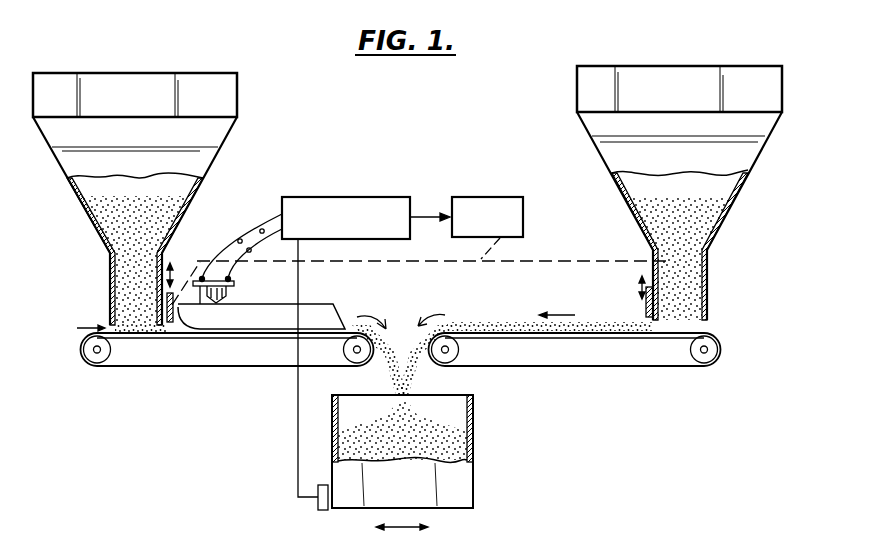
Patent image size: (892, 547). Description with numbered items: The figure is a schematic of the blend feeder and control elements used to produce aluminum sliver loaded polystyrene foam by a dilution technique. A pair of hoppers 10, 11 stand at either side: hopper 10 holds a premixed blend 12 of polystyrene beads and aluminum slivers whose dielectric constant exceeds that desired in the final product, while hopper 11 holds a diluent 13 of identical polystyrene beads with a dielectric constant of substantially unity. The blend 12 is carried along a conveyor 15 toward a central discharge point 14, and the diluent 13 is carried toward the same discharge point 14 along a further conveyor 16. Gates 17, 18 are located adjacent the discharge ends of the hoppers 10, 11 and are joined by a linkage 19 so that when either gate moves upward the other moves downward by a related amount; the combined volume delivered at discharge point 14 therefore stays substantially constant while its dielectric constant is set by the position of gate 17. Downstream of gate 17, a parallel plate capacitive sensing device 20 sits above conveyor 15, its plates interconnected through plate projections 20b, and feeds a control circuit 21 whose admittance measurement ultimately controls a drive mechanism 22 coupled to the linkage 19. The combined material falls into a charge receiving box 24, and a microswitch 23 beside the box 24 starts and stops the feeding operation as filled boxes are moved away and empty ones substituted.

The hopper 10 is at (205, 150).
The hopper 11 is at (620, 152).
The premixed blend 12 is at (153, 216).
The diluent 13 is at (683, 224).
The central discharge point 14 is at (441, 391).
The conveyor 15 is at (140, 367).
The further conveyor 16 is at (600, 367).
The gate 17 is at (172, 324).
The gate 18 is at (645, 309).
The linkage 19 is at (432, 265).
The parallel plate capacitive sensing device 20 is at (340, 315).
The plate projections 20b is at (229, 300).
The control circuit 21 is at (366, 197).
The drive mechanism 22 is at (493, 203).
The microswitch 23 is at (318, 506).
The charge receiving box 24 is at (455, 480).